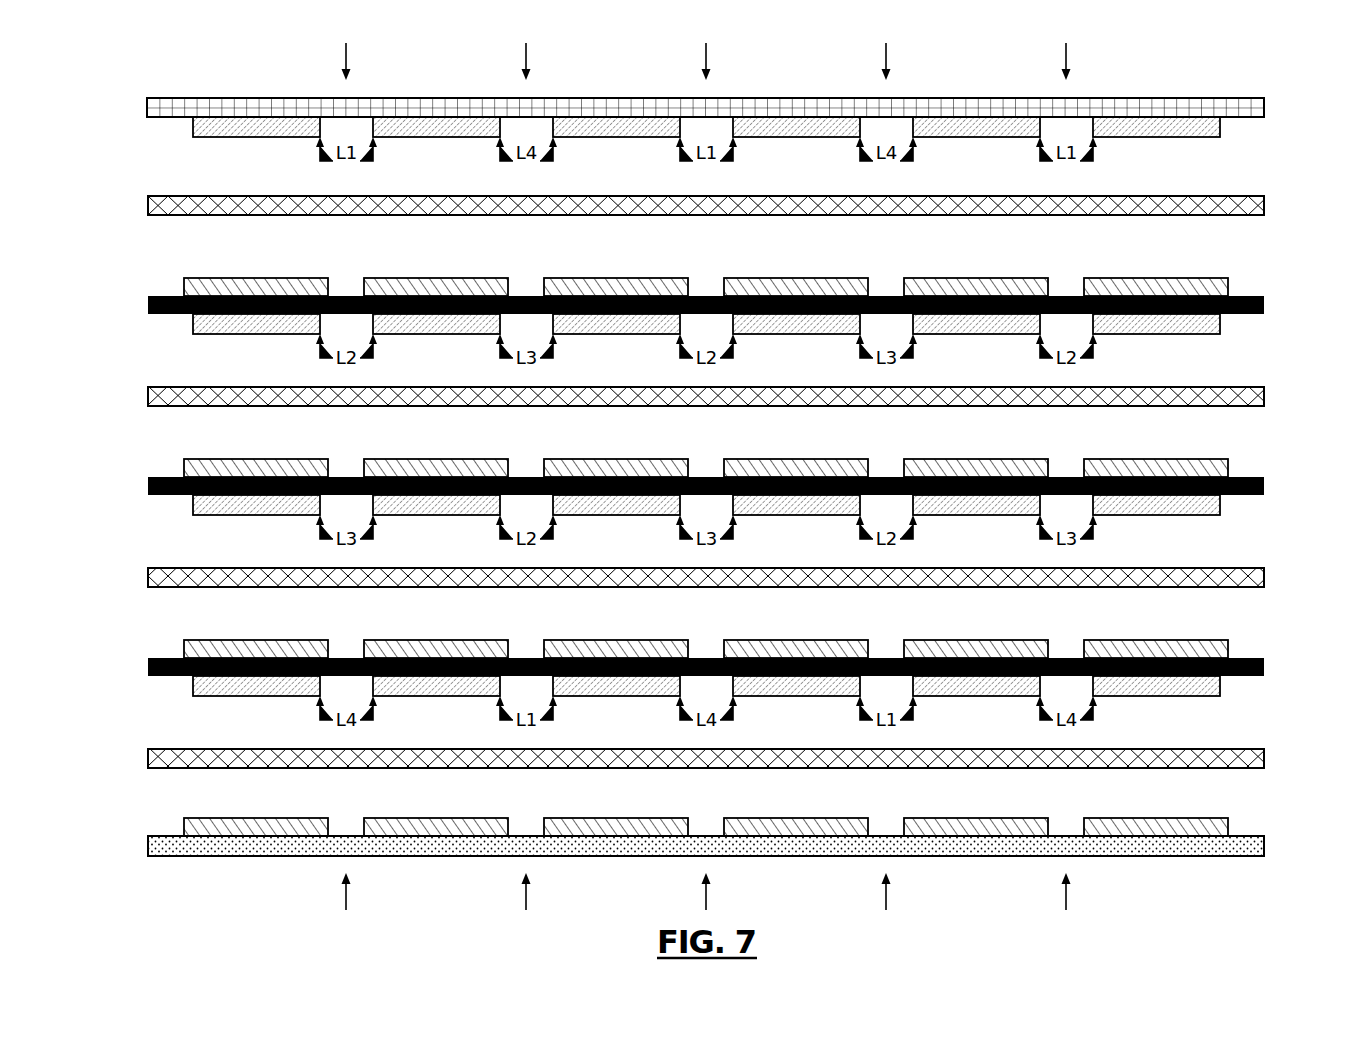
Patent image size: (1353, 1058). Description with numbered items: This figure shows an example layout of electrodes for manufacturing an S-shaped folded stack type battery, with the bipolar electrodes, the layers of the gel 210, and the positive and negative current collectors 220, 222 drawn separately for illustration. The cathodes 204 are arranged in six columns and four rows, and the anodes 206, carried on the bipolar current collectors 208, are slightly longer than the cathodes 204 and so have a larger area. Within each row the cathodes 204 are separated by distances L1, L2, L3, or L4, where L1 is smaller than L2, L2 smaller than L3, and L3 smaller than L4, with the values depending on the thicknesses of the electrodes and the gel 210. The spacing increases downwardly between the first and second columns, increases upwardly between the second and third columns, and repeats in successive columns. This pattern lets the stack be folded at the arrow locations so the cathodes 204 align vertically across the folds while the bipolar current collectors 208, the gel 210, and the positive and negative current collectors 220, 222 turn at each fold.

The cathodes 204 is at (193, 127).
The anodes 206 is at (1228, 284).
The bipolar current collectors 208 is at (147, 307).
The gel 210 is at (1264, 196).
The positive current collector 220 is at (1264, 98).
The negative current collector 222 is at (1265, 838).